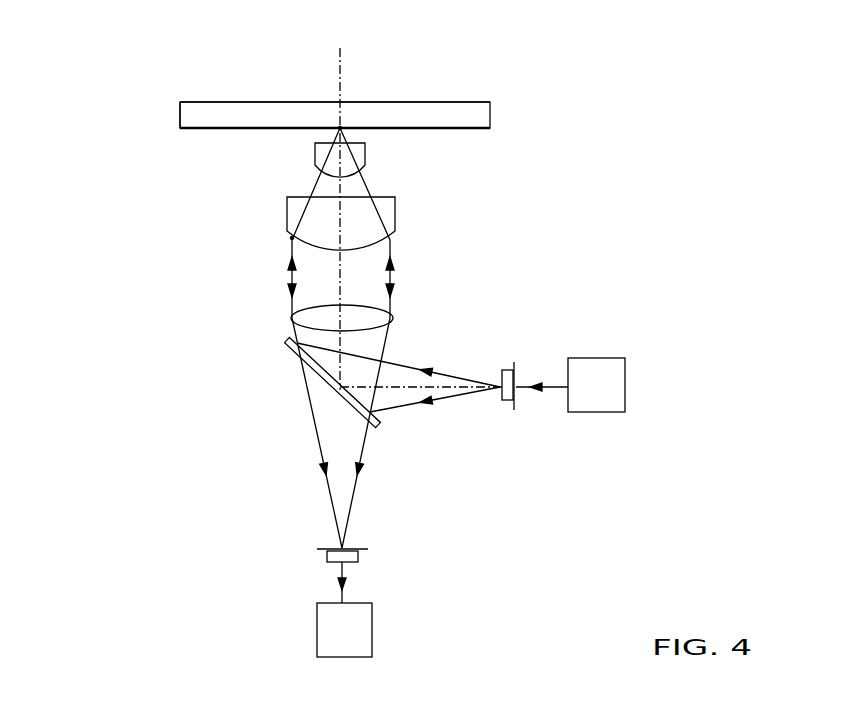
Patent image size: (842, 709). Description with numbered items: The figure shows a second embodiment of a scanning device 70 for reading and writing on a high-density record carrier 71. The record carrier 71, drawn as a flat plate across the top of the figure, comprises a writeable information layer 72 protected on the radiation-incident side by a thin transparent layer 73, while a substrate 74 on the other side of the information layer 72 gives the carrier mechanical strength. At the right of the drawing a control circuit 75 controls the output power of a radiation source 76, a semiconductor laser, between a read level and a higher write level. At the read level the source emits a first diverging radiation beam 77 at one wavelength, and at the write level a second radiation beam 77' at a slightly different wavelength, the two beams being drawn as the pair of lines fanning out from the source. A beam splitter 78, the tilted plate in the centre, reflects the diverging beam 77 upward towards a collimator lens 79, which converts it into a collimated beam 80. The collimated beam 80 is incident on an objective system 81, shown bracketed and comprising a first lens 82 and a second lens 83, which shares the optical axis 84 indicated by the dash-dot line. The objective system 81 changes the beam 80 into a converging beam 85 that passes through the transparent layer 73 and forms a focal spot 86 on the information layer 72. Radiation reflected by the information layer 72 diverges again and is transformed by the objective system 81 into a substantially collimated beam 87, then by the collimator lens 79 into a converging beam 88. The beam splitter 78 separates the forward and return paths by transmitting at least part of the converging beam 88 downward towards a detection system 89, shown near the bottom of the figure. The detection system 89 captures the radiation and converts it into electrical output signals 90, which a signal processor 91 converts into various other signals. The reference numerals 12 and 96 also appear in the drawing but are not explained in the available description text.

The light beam 12 is at (404, 416).
The scanning device 70 is at (140, 356).
The record carrier 71 is at (188, 74).
The information layer 72 is at (185, 124).
The transparent layer 73 is at (194, 130).
The substrate 74 is at (223, 103).
The control circuit 75 is at (592, 358).
The radiation source 76 is at (516, 396).
The first diverging radiation beam 77 is at (399, 359).
The second radiation beam 77' is at (440, 355).
The beam splitter 78 is at (285, 346).
The collimator lens 79 is at (393, 318).
The collimated beam 80 is at (290, 268).
The objective system 81 is at (305, 196).
The first lens 82 is at (324, 223).
The second lens 83 is at (315, 156).
The optical axis 84 is at (344, 63).
The converging beam 85 is at (336, 130).
The focal spot 86 is at (337, 126).
The collimated beam 87 is at (394, 298).
The converging beam 88 is at (386, 344).
The detection system 89 is at (370, 556).
The electrical output signals 90 is at (345, 595).
The signal processor 91 is at (372, 633).
The beam edge 96 is at (292, 238).